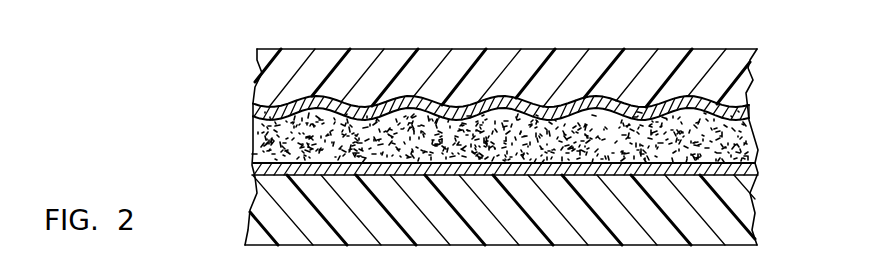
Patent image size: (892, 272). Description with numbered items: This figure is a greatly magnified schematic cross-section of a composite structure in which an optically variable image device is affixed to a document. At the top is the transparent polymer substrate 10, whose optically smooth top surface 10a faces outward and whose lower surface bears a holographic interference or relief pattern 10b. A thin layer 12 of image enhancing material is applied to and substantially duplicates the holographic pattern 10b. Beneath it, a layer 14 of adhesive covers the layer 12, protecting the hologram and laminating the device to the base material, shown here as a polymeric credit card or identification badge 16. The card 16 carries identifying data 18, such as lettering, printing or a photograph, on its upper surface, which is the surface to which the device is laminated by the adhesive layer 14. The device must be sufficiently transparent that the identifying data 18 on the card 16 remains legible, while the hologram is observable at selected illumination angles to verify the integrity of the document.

The transparent polymer substrate 10 is at (265, 78).
The optical smooth top surface 10a is at (733, 50).
The holographic interference or relief pattern 10b is at (750, 118).
The thin layer of image enhancing material 12 is at (257, 102).
The layer of adhesive 14 is at (253, 135).
The polymeric credit card or identification badge 16 is at (263, 212).
The identifying data 18 is at (252, 165).